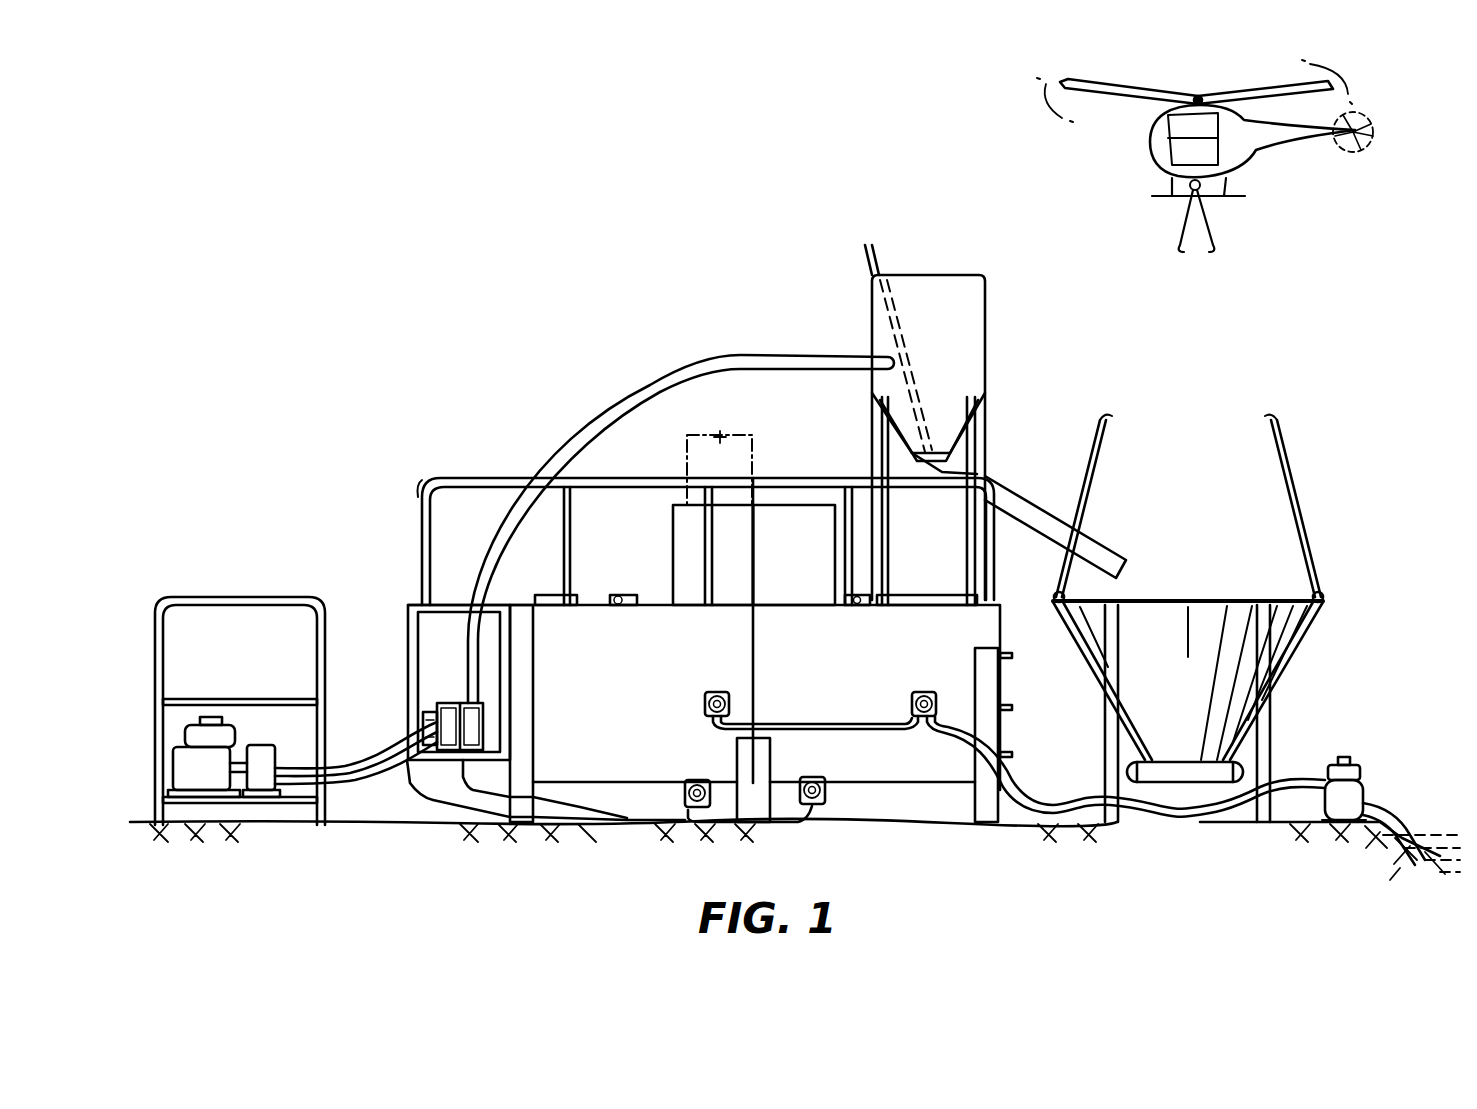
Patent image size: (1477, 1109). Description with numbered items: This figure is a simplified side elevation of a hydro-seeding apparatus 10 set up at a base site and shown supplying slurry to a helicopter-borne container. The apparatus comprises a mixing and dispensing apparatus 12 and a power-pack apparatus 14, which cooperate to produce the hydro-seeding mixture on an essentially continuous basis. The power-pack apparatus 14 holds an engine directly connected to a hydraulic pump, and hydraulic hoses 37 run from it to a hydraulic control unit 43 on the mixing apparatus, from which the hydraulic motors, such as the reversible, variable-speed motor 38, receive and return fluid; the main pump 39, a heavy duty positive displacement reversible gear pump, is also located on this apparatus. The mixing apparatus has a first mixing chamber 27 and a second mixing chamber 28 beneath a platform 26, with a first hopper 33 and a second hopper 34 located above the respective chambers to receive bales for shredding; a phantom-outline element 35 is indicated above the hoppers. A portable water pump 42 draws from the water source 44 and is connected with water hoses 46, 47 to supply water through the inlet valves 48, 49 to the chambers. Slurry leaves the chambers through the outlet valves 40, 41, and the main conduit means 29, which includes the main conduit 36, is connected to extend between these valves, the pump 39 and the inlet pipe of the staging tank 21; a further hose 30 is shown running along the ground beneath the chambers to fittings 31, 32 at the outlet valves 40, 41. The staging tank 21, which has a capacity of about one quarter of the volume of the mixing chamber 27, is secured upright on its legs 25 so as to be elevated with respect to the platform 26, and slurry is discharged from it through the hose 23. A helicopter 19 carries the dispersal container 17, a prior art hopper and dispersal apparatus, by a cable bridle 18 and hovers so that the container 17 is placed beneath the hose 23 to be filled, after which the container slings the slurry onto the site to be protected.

The hydro-seeding apparatus 10 is at (704, 242).
The mixing and dispensing apparatus 12 is at (492, 428).
The power-pack apparatus 14 is at (240, 560).
The dispersal container 17 is at (1315, 662).
The cable bridle 18 is at (1103, 445).
The helicopter 19 is at (1055, 160).
The staging tank 21 is at (968, 314).
The hose 23 is at (1015, 500).
The legs 25 is at (880, 430).
The platform 26 is at (654, 598).
The first mixing chamber 27 is at (650, 689).
The second mixing chamber 28 is at (860, 691).
The main conduit means 29 is at (746, 345).
The supply hose 30 is at (566, 804).
The valve 31 is at (690, 778).
The valve 32 is at (815, 776).
The first hopper 33 is at (680, 517).
The second hopper 34 is at (815, 550).
The motor (phantom) 35 is at (720, 436).
The main conduit 36 is at (637, 380).
The hydraulic hoses 37 is at (370, 756).
The motor 38 is at (495, 735).
The main pump 39 is at (505, 715).
The outlet valve 40 is at (690, 795).
The outlet valve 41 is at (818, 800).
The portable water pump 42 is at (1343, 800).
The hydraulic control unit 43 is at (430, 714).
The water source 44 is at (1435, 834).
The water hose 46 is at (780, 726).
The water hose 47 is at (940, 722).
The inlet valve 48 is at (714, 690).
The inlet valve 49 is at (917, 690).